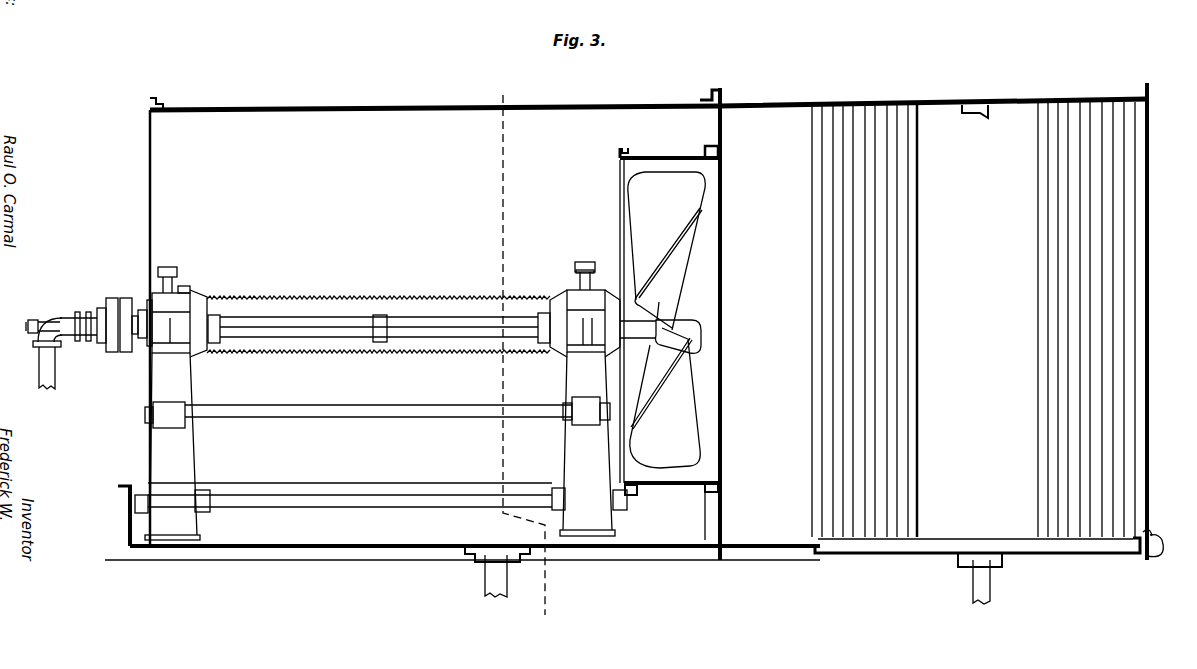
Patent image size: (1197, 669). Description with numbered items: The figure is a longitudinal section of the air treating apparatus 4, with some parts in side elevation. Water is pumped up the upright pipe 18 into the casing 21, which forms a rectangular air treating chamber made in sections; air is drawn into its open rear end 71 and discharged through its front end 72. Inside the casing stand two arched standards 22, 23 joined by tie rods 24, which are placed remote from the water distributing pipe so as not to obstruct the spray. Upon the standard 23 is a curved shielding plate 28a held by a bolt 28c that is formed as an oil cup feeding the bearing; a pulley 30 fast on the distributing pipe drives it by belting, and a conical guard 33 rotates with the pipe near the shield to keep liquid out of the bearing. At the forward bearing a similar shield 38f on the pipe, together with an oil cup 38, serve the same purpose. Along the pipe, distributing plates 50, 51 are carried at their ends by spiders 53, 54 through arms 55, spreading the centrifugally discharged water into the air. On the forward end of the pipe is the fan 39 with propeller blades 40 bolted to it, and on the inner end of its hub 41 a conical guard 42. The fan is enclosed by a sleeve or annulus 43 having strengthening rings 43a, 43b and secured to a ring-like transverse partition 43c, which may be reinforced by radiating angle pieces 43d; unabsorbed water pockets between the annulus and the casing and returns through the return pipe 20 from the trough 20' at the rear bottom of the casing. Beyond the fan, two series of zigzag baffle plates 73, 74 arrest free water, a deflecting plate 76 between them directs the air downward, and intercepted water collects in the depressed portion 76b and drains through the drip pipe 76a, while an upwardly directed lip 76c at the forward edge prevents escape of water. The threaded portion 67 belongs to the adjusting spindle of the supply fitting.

The air treating apparatus 4 is at (517, 360).
The upright pipe 18 is at (48, 368).
The return pipe 20 is at (462, 574).
The trough 20' is at (105, 516).
The casing 21 is at (323, 107).
The standard 22 is at (565, 386).
The standard 23 is at (178, 380).
The tie rods 24 is at (348, 410).
The curved shielding plate 28a is at (166, 267).
The bolt 28c is at (182, 290).
The pulley 30 is at (112, 298).
The guard 33 is at (200, 292).
The oil cup 38 is at (588, 262).
The shield 38f is at (578, 270).
The fan 39 is at (680, 333).
The propeller blades 40 is at (672, 299).
The hub 41 is at (641, 340).
The conical guard 42 is at (616, 290).
The sleeve or annulus 43 is at (642, 157).
The strengthening ring 43a is at (620, 153).
The strengthening ring 43b is at (705, 150).
The transverse partition 43c is at (724, 134).
The radiating angle pieces 43d is at (712, 140).
The distributing plate 50 is at (441, 297).
The distributing plate 51 is at (450, 354).
The spider 53 is at (222, 318).
The spider 54 is at (545, 315).
The arms 55 is at (378, 315).
The threaded portion 67 is at (36, 318).
The open rear end 71 is at (150, 160).
The front end 72 is at (1149, 328).
The series of baffle plates 73 is at (917, 97).
The series of baffle plates 74 is at (1143, 97).
The deflecting plate 76 is at (986, 110).
The drip or return pipe 76a is at (972, 594).
The depressed portion 76b is at (1068, 550).
The upwardly directed lip 76c is at (1158, 560).